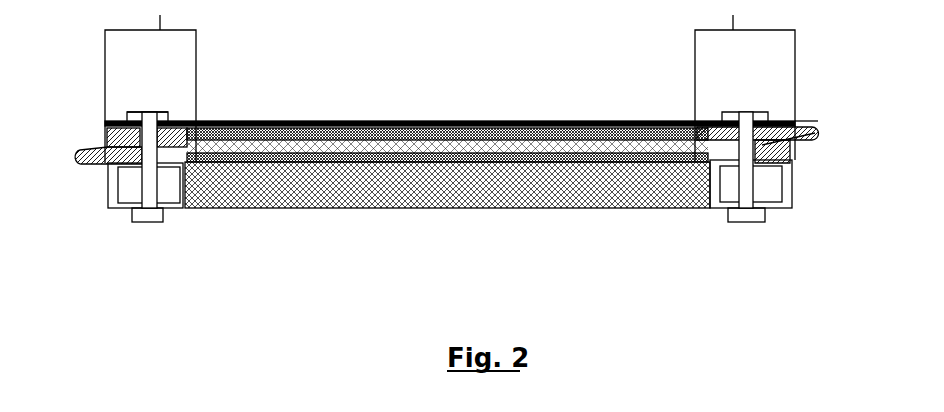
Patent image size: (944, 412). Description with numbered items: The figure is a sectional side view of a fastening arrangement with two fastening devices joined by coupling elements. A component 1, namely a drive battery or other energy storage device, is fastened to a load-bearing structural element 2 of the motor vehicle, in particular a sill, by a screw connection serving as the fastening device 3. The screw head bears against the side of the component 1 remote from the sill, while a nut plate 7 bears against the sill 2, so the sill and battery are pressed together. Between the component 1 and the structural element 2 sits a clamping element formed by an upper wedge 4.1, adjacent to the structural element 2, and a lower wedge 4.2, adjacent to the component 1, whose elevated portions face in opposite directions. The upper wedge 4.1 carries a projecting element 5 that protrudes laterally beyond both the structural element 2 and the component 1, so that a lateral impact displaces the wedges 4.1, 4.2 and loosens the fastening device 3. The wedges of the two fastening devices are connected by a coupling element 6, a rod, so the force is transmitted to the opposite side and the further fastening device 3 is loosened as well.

The component 1 is at (585, 185).
The load-bearing structural element 2 is at (196, 45).
The fastening device 3 is at (150, 178).
The upper wedge 4.1 is at (110, 130).
The lower wedge 4.2 is at (98, 165).
The projecting element 5 is at (811, 118).
The coupling element 6 is at (272, 135).
The nut plate 7 is at (168, 112).